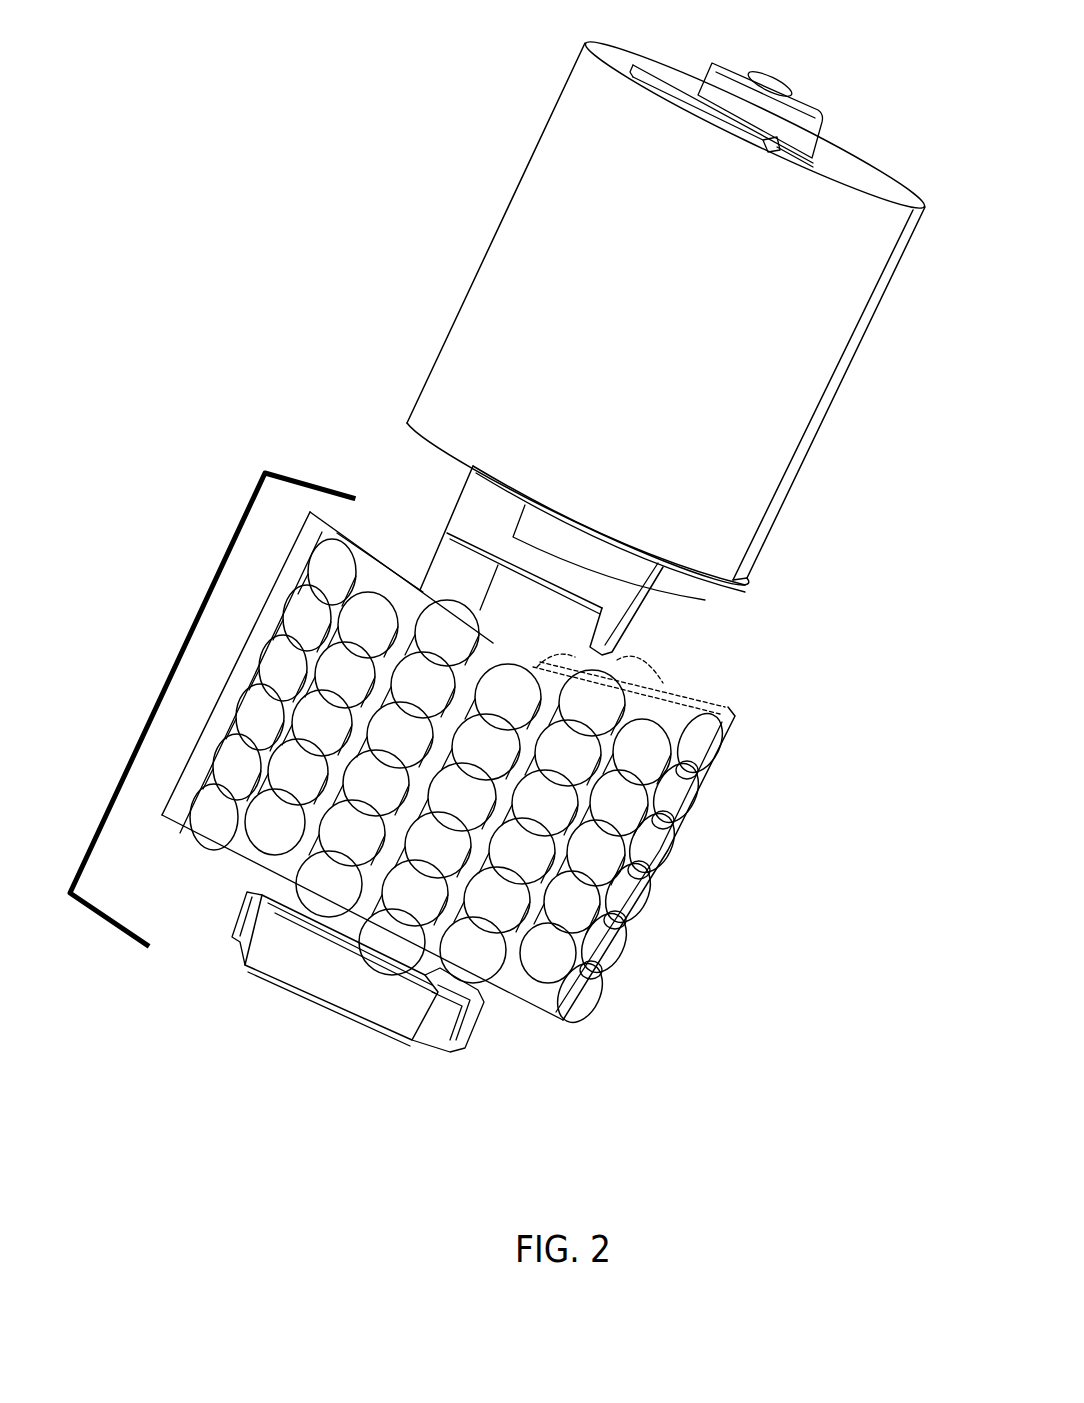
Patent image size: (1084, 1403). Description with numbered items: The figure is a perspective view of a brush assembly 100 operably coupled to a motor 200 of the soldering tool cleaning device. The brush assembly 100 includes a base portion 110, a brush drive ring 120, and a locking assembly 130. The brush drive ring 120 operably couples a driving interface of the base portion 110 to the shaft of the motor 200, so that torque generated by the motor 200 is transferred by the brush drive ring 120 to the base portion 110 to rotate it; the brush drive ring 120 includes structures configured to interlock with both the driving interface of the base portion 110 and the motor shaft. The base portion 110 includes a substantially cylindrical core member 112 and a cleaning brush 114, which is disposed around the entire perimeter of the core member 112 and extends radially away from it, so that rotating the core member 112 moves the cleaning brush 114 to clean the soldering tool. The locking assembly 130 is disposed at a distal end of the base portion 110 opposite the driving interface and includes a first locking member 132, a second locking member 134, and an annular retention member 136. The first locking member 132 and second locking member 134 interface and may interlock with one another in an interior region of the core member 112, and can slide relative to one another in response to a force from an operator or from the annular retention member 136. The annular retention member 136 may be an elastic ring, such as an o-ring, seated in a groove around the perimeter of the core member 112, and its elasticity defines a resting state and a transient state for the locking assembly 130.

The brush assembly 100 is at (503, 596).
The base portion 110 is at (439, 751).
The core member 112 is at (689, 628).
The cleaning brush 114 is at (692, 867).
The brush drive ring 120 is at (629, 580).
The locking assembly 130 is at (318, 1029).
The first locking member 132 is at (180, 974).
The second locking member 134 is at (388, 1048).
The annular retention member 136 is at (328, 976).
The motor 200 is at (679, 306).